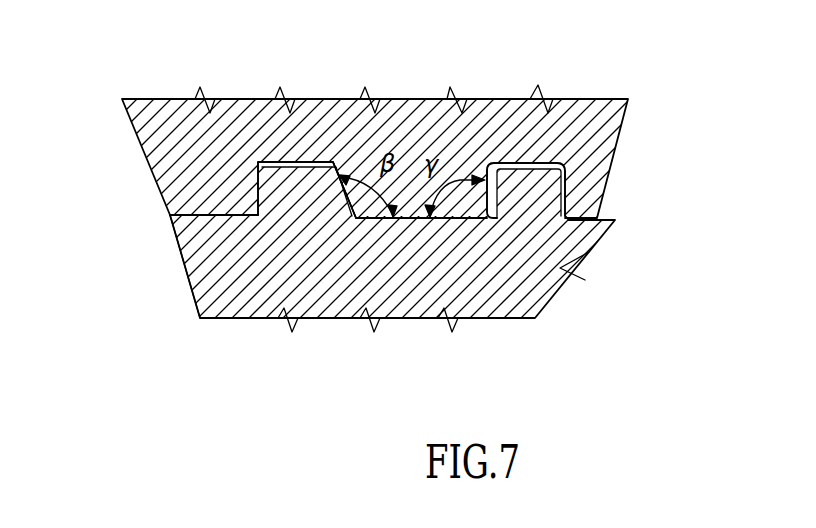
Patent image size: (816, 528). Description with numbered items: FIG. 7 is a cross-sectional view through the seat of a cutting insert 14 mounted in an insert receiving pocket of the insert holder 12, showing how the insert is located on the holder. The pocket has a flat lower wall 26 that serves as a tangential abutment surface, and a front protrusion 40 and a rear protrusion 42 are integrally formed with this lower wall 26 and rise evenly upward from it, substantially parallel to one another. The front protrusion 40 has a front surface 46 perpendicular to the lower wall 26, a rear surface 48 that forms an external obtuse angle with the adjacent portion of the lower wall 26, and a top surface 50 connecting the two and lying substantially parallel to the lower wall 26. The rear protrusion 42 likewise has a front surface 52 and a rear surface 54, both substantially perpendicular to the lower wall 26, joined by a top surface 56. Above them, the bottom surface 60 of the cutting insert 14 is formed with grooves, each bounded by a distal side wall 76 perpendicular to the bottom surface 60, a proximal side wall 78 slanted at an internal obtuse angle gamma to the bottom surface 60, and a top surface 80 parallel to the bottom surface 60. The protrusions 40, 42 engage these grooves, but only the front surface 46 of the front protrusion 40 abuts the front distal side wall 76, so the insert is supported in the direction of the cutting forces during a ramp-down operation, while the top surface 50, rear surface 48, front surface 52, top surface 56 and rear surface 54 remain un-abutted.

The insert holder 12 is at (190, 255).
The cutting insert 14 is at (168, 99).
The lower wall 26 is at (187, 214).
The front protrusion 40 is at (280, 162).
The rear protrusion 42 is at (503, 167).
The front surface 46 is at (252, 163).
The rear surface 48 is at (340, 172).
The top surface 50 is at (342, 170).
The front surface 52 is at (487, 170).
The rear surface 54 is at (566, 196).
The top surface 56 is at (549, 163).
The bottom surface 60 is at (421, 216).
The distal side wall 76 is at (200, 318).
The proximal side wall 78 is at (350, 205).
The top surface 80 is at (285, 195).